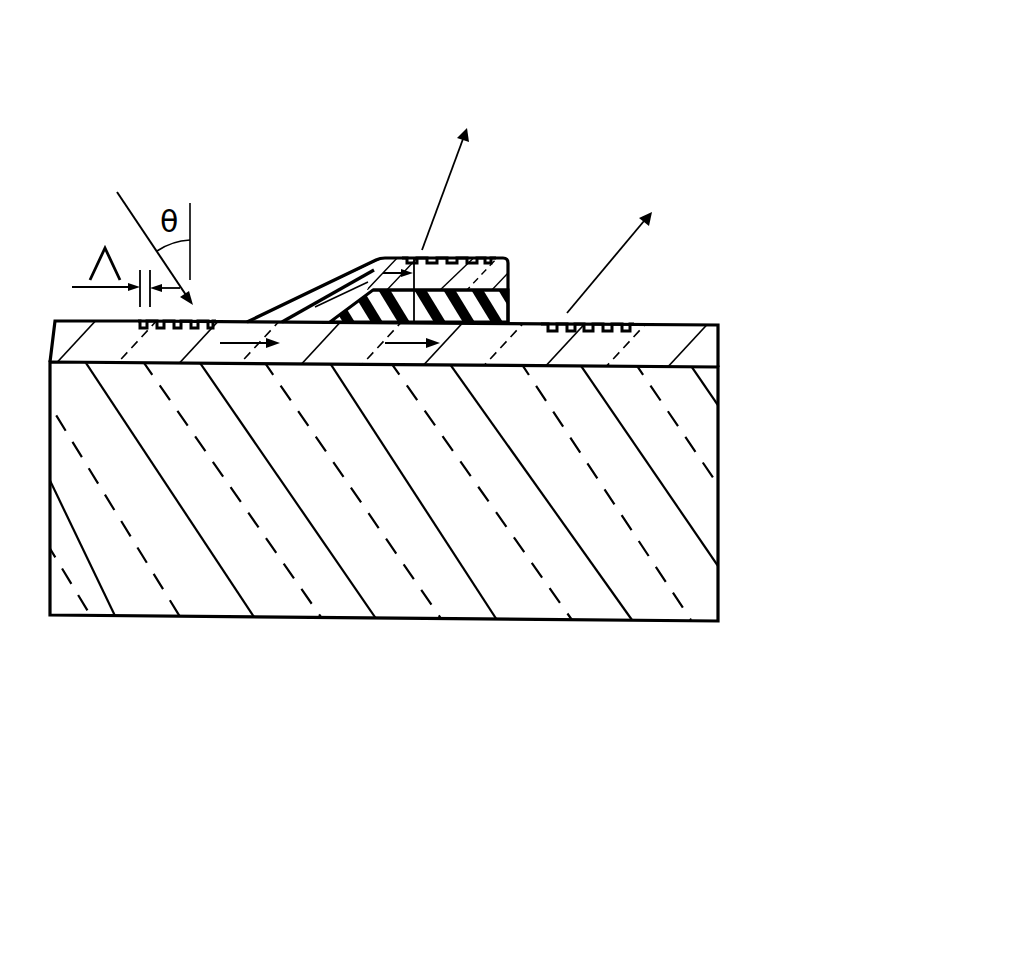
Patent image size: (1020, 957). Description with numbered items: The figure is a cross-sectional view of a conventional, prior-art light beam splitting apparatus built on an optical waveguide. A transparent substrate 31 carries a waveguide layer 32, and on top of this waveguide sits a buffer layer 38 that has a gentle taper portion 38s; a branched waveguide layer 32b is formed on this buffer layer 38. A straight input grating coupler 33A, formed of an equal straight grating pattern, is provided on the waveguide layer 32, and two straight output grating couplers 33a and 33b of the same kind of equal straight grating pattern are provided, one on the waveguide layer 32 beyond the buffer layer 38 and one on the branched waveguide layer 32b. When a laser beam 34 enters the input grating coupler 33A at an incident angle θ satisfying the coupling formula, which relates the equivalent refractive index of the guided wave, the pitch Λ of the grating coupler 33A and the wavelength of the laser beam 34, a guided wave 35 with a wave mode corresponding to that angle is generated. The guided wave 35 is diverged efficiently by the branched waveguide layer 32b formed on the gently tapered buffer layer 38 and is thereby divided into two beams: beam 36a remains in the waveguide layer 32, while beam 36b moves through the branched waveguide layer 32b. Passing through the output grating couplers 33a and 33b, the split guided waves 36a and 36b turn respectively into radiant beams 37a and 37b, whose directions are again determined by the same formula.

The transparent substrate 31 is at (700, 473).
The waveguide layer 32 is at (705, 343).
The branched waveguide layer 32b is at (508, 297).
The straight input grating coupler 33A is at (203, 313).
The straight output grating coupler 33a is at (597, 313).
The straight output grating coupler 33b is at (443, 258).
The laser beam 34 is at (130, 220).
The guided wave 35 is at (240, 340).
The guided wave beam remaining in waveguide layer 36a is at (414, 258).
The guided wave beam in branched waveguide layer 36b is at (339, 282).
The radiant beam 37a is at (637, 237).
The radiant beam 37b is at (455, 156).
The buffer layer 38 is at (508, 303).
The gentle taper portion 38s is at (372, 270).